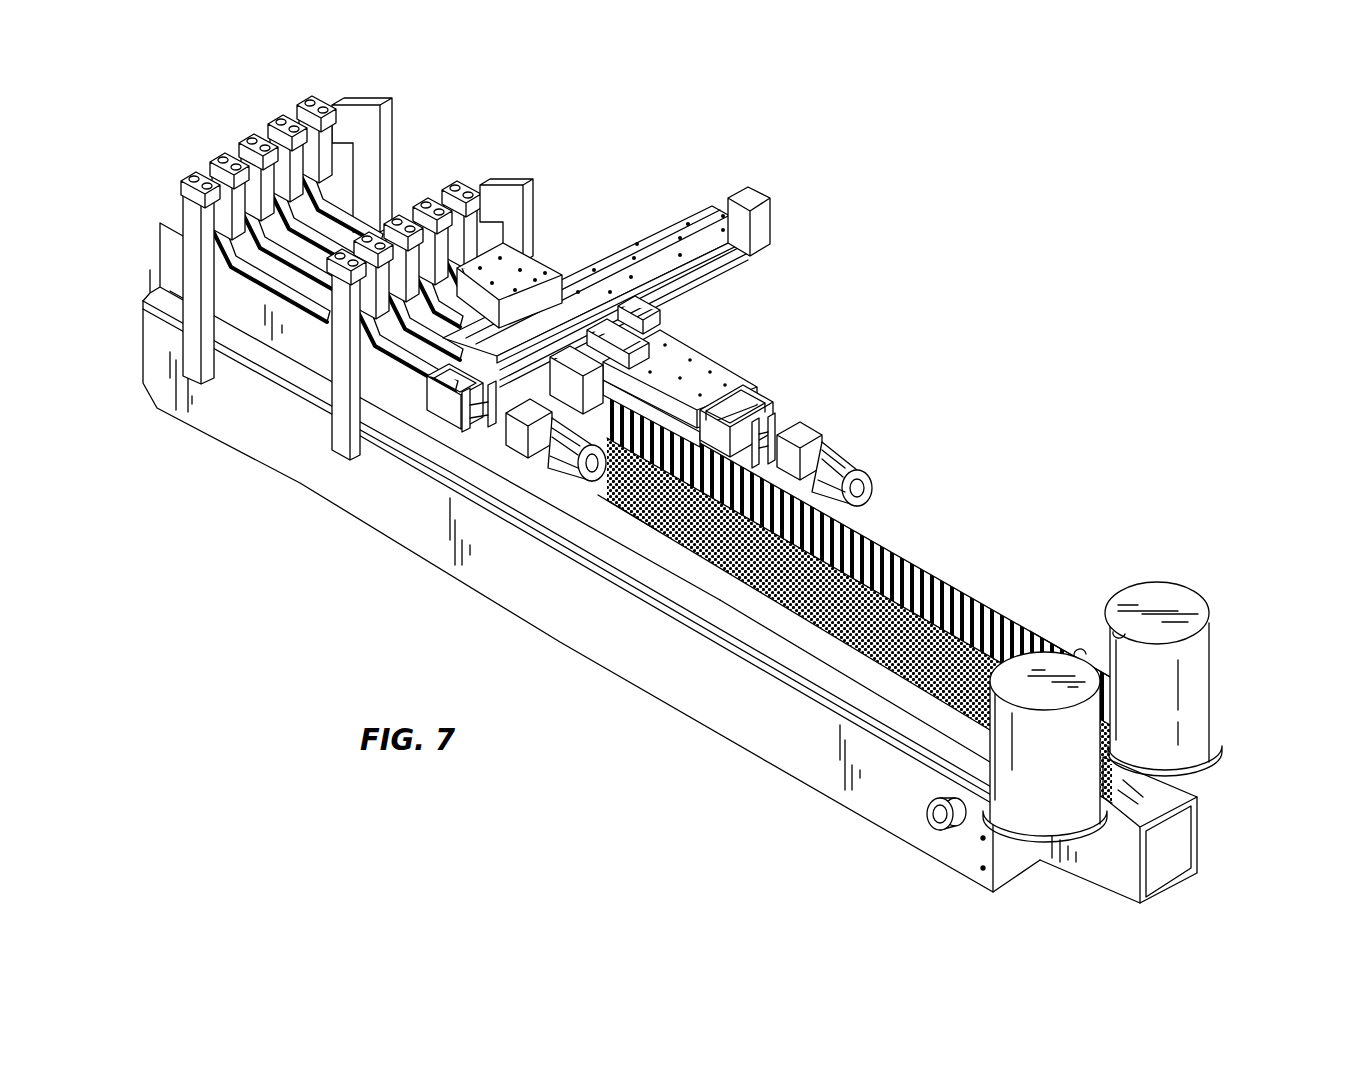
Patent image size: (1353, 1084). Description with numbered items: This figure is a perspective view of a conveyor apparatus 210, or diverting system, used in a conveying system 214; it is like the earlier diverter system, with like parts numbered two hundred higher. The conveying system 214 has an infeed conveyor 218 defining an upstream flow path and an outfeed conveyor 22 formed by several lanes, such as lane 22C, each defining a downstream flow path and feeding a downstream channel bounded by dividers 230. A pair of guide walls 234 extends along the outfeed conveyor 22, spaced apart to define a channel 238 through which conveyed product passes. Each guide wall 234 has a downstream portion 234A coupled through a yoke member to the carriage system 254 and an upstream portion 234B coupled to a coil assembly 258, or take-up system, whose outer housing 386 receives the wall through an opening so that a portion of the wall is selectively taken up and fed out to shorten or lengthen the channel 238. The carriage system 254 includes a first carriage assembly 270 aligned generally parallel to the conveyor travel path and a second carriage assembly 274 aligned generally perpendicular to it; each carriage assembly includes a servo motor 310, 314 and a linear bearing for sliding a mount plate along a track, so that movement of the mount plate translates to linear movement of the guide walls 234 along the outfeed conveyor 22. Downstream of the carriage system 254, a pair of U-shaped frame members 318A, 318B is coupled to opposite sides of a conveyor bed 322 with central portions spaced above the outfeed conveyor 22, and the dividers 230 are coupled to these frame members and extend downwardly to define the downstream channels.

The outfeed conveyor 22 is at (657, 570).
The lane 22C is at (732, 610).
The conveyor apparatus 210 is at (715, 509).
The conveying system 214 is at (715, 509).
The infeed conveyor 218 is at (1167, 790).
The dividers 230 is at (362, 226).
The guide wall 234 is at (808, 596).
The downstream portion of guide wall 234A is at (558, 484).
The upstream portion of guide wall 234B is at (1077, 647).
The channel 238 is at (908, 587).
The carriage system 254 is at (606, 270).
The coil assembly 258 is at (1081, 713).
The first carriage assembly 270 is at (708, 356).
The second carriage assembly 274 is at (681, 204).
The servo motor 310 is at (828, 446).
The servo motor 314 is at (547, 457).
The U-shaped frame member 318A is at (512, 192).
The U-shaped frame member 318B is at (367, 105).
The conveyor bed 322 is at (237, 437).
The outer housing 386 is at (1135, 758).